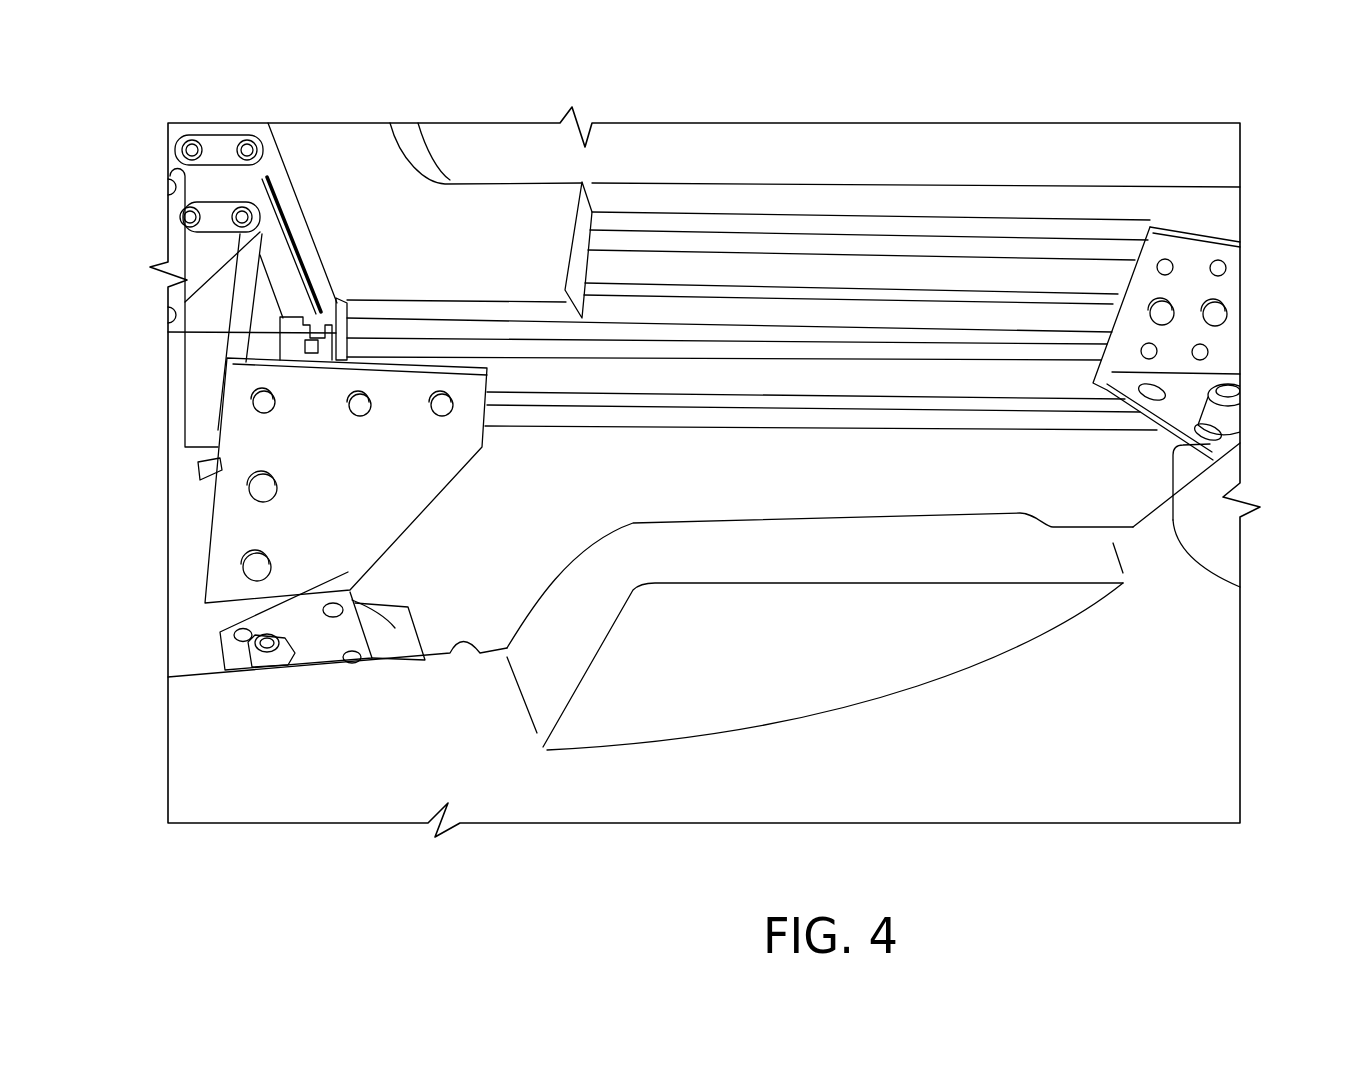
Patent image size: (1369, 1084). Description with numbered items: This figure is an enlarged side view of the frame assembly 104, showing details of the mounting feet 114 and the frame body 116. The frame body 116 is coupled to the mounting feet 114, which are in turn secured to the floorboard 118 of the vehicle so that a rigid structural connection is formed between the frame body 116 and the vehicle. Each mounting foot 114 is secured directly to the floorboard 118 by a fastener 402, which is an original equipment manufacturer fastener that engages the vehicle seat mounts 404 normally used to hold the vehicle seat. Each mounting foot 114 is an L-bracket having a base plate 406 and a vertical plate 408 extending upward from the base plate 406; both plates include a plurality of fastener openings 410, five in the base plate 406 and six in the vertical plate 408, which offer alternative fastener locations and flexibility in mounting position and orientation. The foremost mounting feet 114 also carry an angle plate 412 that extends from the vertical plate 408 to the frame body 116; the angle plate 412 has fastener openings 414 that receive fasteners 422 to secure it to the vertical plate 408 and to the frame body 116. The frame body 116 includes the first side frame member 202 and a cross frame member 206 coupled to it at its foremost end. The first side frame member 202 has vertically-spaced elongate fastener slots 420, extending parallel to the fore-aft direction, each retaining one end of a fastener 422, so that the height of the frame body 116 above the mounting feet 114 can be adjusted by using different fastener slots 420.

The frame assembly 104 is at (171, 110).
The cross frame member 206 is at (290, 203).
The frame body 116 is at (865, 160).
The fastener slots 420 is at (762, 402).
The angle plate 412 is at (210, 466).
The fastener openings 414 is at (254, 403).
The fasteners 422 is at (435, 395).
The vehicle seat mounts 404 is at (350, 598).
The fastener 402 is at (256, 644).
The mounting feet 114 is at (253, 692).
The floorboard 118 is at (448, 655).
The first side frame member 202 is at (713, 415).
The base plate 406 is at (1240, 587).
The vertical plate 408 is at (1232, 280).
The fastener openings 410 is at (1167, 259).